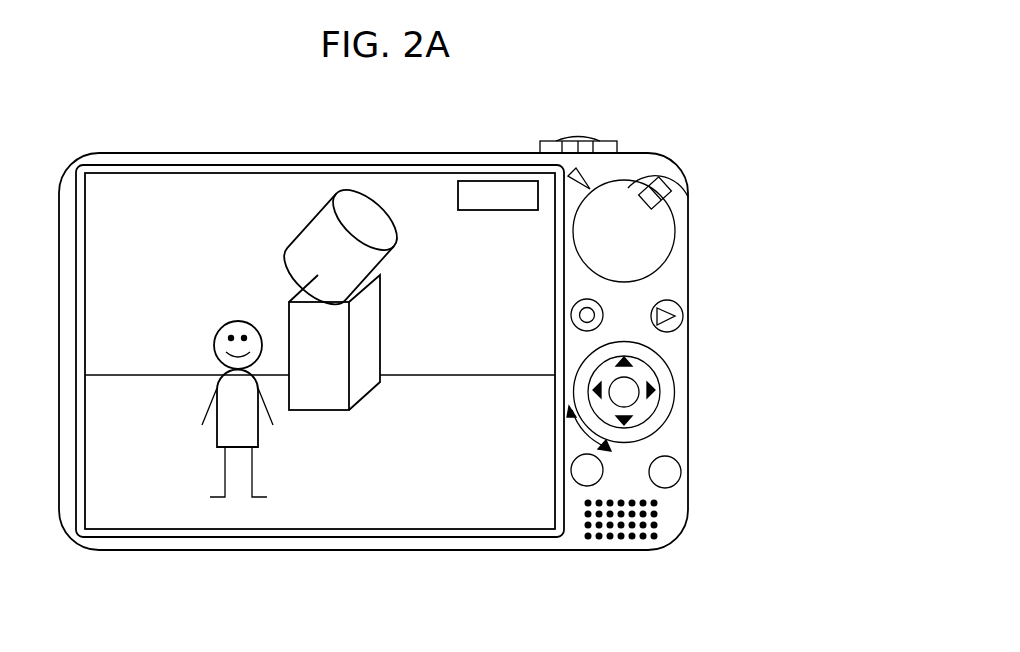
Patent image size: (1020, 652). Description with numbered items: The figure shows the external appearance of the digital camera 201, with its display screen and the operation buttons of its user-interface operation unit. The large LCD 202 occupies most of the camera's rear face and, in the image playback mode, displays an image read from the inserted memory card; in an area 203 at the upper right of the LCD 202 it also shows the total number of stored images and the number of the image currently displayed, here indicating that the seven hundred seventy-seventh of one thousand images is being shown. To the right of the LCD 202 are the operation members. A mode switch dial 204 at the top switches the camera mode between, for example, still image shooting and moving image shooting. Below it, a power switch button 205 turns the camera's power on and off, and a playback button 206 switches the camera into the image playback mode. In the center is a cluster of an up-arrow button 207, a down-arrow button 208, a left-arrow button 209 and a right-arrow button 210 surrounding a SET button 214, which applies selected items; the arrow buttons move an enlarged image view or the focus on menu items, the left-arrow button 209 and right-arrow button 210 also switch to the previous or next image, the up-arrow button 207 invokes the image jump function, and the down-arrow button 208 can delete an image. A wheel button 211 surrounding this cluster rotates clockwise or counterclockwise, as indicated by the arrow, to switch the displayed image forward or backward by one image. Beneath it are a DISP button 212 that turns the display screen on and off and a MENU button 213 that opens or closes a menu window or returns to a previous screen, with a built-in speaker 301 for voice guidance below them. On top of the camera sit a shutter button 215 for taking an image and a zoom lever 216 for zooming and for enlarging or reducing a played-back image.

The digital camera 201 is at (108, 153).
The LCD 202 is at (178, 185).
The image number display area 203 is at (477, 181).
The mode switch dial 204 is at (628, 188).
The power switch button 205 is at (586, 310).
The playback button 206 is at (668, 310).
The up-arrow button 207 is at (623, 358).
The down-arrow button 208 is at (623, 421).
The left-arrow button 209 is at (592, 390).
The right-arrow button 210 is at (657, 390).
The wheel button 211 is at (655, 425).
The DISP button 212 is at (580, 476).
The MENU button 213 is at (673, 480).
The SET button 214 is at (616, 378).
The shutter button 215 is at (580, 138).
The zoom lever 216 is at (613, 139).
The speaker 301 is at (642, 535).